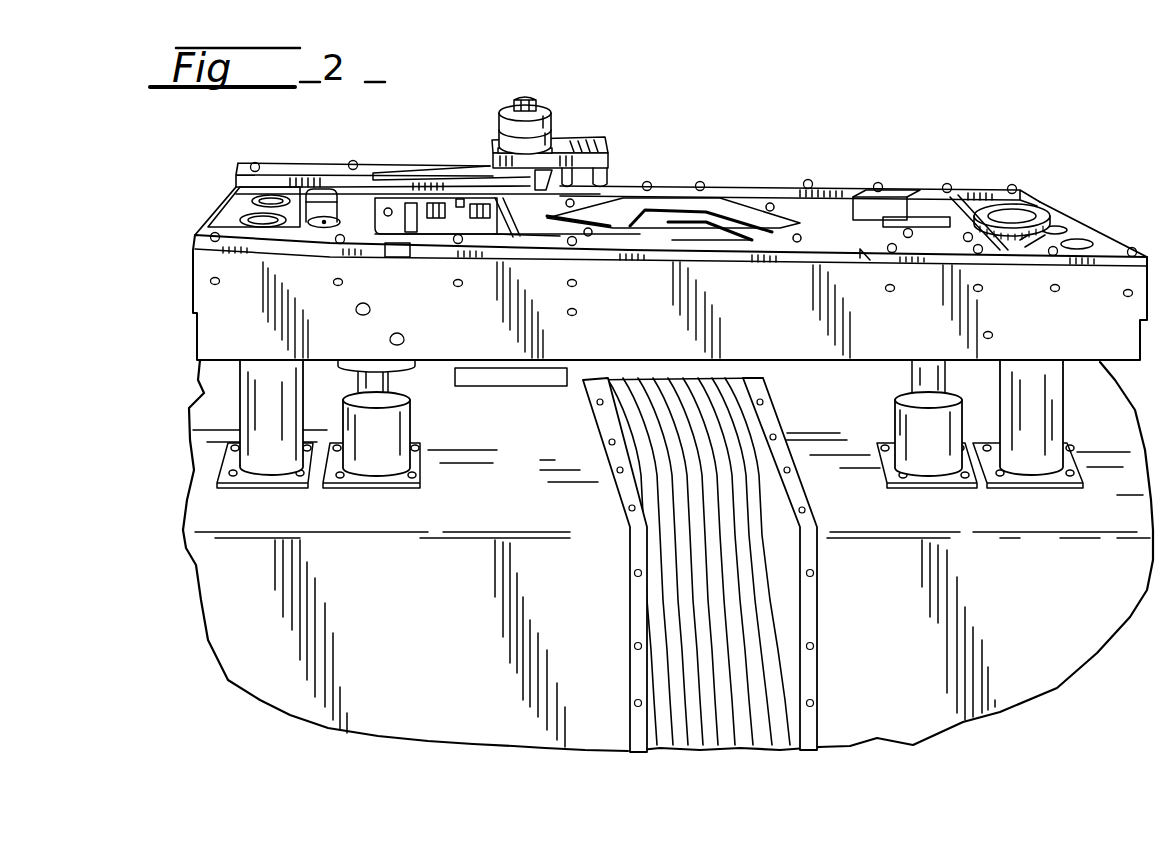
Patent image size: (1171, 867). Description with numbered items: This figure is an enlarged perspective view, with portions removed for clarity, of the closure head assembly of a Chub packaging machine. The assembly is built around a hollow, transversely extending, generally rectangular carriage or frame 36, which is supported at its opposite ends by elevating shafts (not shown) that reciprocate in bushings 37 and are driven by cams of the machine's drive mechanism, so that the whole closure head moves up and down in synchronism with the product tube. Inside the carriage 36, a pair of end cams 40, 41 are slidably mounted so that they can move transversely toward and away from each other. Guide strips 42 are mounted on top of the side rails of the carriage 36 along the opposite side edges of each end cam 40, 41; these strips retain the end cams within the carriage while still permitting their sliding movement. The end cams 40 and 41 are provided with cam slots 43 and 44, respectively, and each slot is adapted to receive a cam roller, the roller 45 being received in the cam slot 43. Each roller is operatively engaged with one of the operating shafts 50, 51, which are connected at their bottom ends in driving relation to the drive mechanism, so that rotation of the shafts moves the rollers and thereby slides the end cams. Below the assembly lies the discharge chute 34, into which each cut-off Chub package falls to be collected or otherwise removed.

The discharge chute 34 is at (652, 446).
The carriage or frame 36 is at (764, 315).
The bushings 37 is at (240, 393).
The end cam 40 is at (232, 212).
The end cam 41 is at (1050, 220).
The guide strips 42 is at (276, 168).
The cam slot 43 is at (316, 200).
The cam slot 44 is at (1027, 232).
The cam roller 45 is at (316, 228).
The operating shaft 50 is at (390, 385).
The operating shaft 51 is at (910, 373).